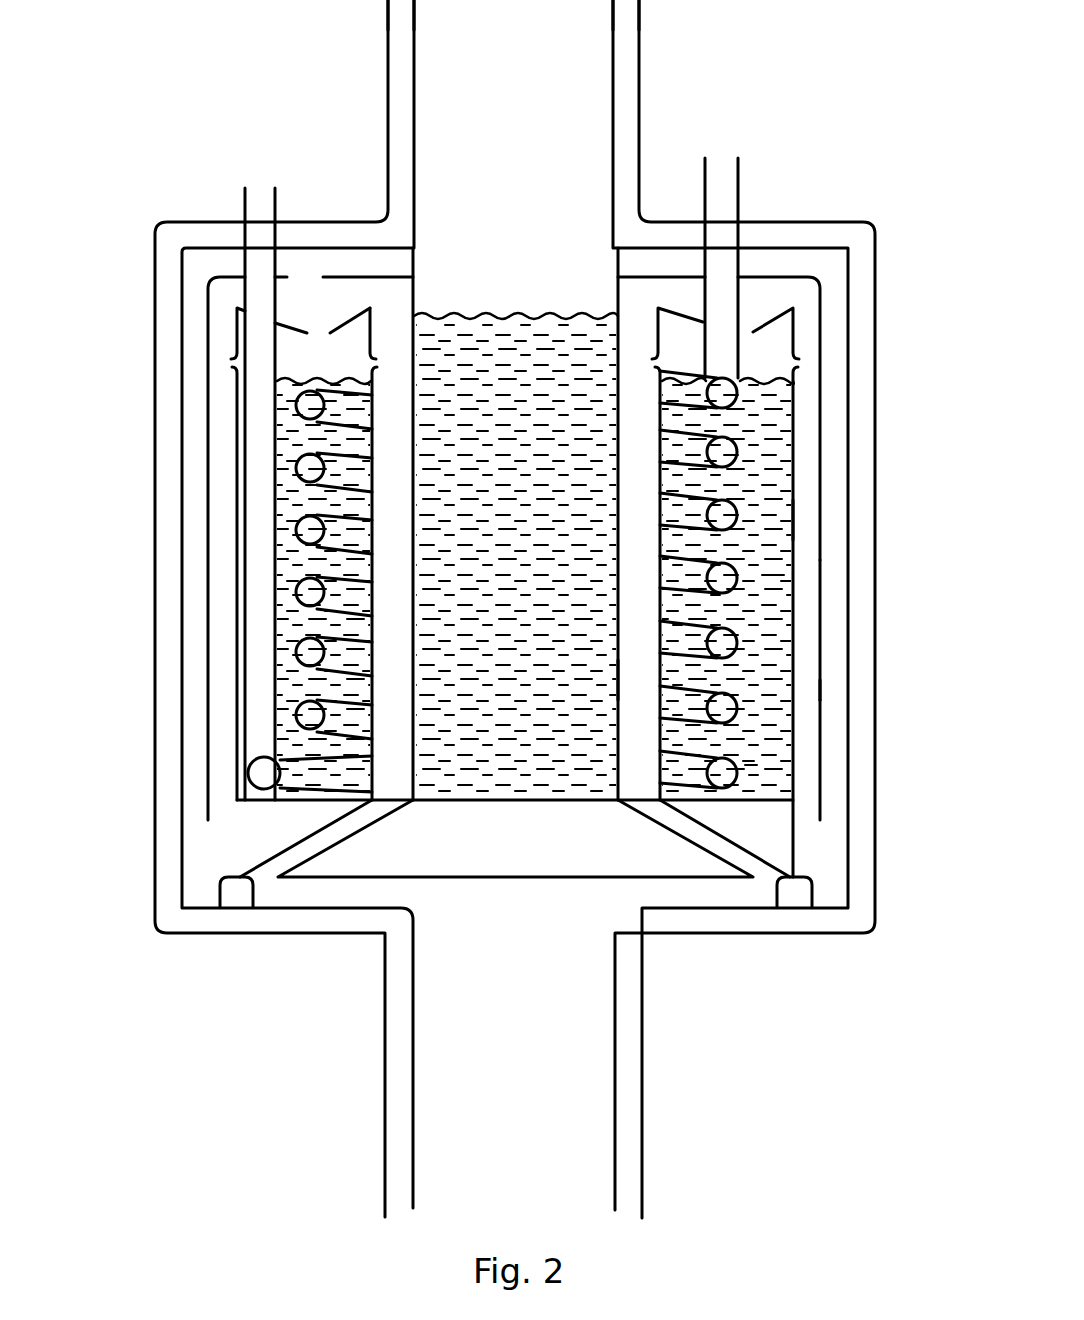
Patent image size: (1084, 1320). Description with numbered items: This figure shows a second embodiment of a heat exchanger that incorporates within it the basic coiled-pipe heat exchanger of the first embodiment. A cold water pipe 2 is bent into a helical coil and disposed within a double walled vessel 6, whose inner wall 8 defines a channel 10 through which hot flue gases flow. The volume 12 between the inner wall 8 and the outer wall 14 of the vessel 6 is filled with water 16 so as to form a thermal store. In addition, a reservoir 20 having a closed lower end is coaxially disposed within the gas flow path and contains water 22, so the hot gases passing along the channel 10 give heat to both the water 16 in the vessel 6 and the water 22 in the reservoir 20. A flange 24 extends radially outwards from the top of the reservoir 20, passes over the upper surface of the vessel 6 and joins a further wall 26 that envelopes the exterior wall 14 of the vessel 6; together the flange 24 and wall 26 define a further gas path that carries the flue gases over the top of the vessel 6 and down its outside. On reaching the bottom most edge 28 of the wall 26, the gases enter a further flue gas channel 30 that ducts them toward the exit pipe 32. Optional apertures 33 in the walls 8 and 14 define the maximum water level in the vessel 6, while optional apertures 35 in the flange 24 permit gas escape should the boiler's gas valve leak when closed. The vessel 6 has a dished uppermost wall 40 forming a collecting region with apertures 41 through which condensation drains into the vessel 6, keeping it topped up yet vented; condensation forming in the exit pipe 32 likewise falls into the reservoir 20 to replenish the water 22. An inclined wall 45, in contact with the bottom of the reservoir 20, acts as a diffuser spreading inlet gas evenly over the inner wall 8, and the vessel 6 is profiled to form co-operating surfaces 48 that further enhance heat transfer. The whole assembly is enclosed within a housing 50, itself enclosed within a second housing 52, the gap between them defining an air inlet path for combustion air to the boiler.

The cold water pipe 2 is at (738, 195).
The double walled vessel 6 is at (800, 690).
The inner wall 8 is at (660, 543).
The channel 10 is at (640, 677).
The volume 12 is at (760, 770).
The outer wall 14 is at (795, 520).
The water 16 is at (785, 580).
The reservoir 20 is at (410, 767).
The water 22 is at (415, 625).
The flange 24 is at (800, 278).
The further wall 26 is at (823, 350).
The bottom most edge 28 is at (825, 808).
The further flue gas channel 30 is at (192, 518).
The exit pipe 32 is at (615, 157).
The apertures 33 is at (380, 364).
The apertures 35 is at (307, 267).
The uppermost wall 40 is at (353, 313).
The apertures 41 is at (317, 333).
The inclined wall 45 is at (700, 848).
The co-operating surfaces 48 is at (780, 860).
The housing 50 is at (182, 855).
The second housing 52 is at (155, 770).